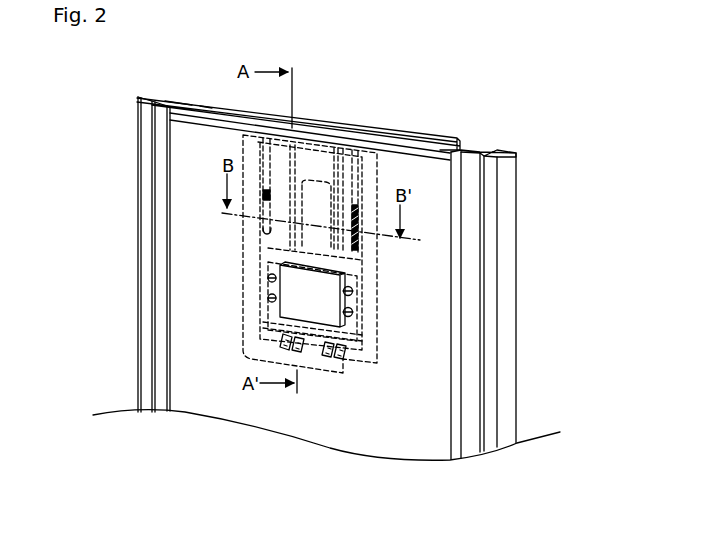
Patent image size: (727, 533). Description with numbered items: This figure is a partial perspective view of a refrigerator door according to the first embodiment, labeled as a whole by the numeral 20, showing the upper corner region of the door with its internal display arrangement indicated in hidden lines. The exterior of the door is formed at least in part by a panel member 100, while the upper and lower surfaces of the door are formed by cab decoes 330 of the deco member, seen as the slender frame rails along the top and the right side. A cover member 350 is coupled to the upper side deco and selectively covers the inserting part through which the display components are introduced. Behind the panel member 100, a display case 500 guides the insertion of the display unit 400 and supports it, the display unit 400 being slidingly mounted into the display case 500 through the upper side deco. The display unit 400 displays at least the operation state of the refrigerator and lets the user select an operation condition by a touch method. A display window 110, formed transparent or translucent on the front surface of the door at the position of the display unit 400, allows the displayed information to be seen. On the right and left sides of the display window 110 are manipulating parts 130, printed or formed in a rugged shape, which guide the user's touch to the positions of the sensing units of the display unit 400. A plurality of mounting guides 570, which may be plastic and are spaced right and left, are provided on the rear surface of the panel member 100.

The battery pack housing 20 is at (168, 376).
The panel member 100 is at (268, 405).
The display window 110 is at (320, 310).
The manipulating parts 130 is at (353, 291).
The cab decoes 330 is at (442, 144).
The cover member 350 is at (318, 118).
The display unit 400 is at (266, 311).
The display case 500 is at (241, 253).
The mounting guides 570 is at (265, 190).